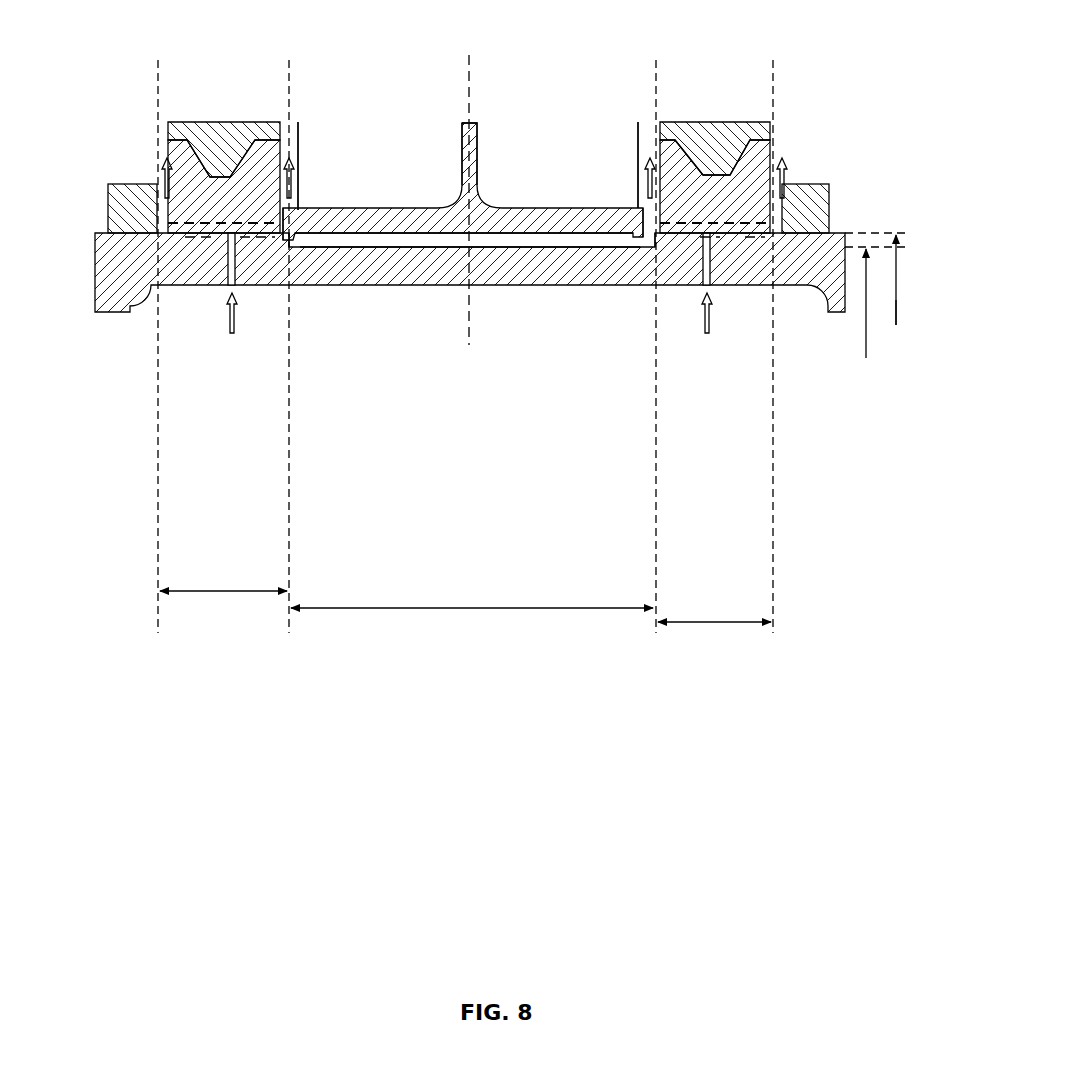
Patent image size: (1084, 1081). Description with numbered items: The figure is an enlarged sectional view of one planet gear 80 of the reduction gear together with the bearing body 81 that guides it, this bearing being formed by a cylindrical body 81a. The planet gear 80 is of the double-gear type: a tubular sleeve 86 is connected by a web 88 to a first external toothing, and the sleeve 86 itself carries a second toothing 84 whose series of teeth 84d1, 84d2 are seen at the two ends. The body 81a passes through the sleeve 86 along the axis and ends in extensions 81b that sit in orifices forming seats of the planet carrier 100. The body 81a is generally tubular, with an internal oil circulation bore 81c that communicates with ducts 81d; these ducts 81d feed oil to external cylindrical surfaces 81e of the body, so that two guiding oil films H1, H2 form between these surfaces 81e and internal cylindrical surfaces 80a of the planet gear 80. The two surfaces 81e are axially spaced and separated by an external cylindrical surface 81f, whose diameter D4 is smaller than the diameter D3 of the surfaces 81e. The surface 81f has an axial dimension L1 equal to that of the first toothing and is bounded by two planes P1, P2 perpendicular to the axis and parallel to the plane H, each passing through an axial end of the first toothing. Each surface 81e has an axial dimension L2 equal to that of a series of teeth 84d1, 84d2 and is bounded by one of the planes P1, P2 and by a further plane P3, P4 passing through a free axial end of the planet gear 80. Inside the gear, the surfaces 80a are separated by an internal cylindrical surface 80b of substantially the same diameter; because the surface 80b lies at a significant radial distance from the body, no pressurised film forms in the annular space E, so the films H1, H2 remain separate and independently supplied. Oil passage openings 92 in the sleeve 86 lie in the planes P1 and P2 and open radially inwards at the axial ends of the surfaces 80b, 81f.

The planet gear 80 is at (345, 178).
The internal cylindrical surfaces 80a is at (218, 232).
The internal cylindrical surface 80b is at (535, 233).
The base member 81 is at (108, 310).
The cylindrical body 81a is at (656, 250).
The extensions 81b is at (120, 255).
The internal oil circulation bore 81c is at (284, 282).
The ducts 81d is at (224, 266).
The external cylindrical surfaces 81e is at (190, 228).
The external cylindrical surface 81f is at (393, 245).
The second toothing 84 is at (213, 175).
The series of teeth 84d1 is at (224, 149).
The series of teeth 84d2 is at (715, 148).
The tubular sleeve 86 is at (440, 228).
The web 88 is at (463, 168).
The oil passage openings 92 is at (298, 160).
The planet carrier 100 is at (112, 182).
The plane H is at (483, 198).
The guiding oil film H1 is at (296, 125).
The guiding oil film H2 is at (695, 200).
The annular space E is at (487, 243).
The plane P1 is at (283, 440).
The plane P2 is at (656, 482).
The plane P3 is at (158, 537).
The plane P4 is at (773, 537).
The axial dimension L1 is at (472, 626).
The axial dimension L2 is at (465, 623).
The diameter D3 is at (896, 325).
The diameter D4 is at (866, 358).